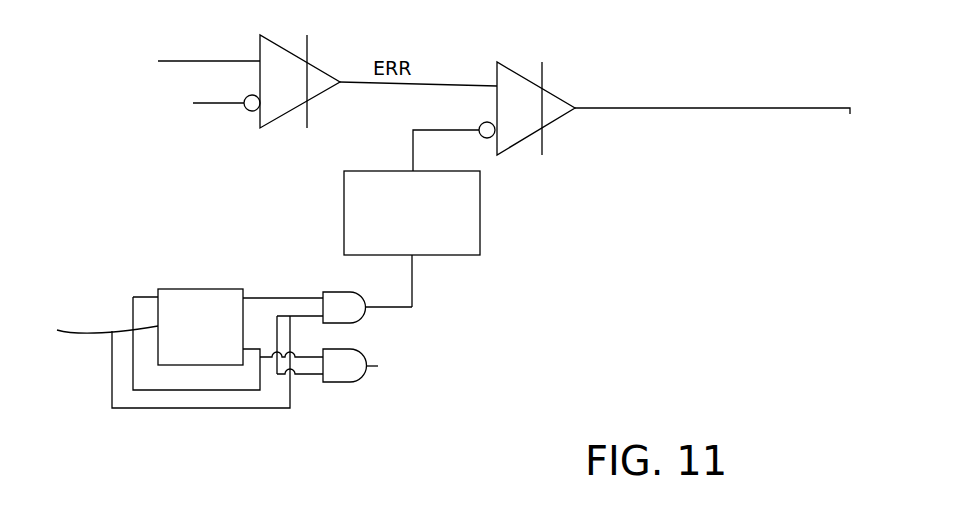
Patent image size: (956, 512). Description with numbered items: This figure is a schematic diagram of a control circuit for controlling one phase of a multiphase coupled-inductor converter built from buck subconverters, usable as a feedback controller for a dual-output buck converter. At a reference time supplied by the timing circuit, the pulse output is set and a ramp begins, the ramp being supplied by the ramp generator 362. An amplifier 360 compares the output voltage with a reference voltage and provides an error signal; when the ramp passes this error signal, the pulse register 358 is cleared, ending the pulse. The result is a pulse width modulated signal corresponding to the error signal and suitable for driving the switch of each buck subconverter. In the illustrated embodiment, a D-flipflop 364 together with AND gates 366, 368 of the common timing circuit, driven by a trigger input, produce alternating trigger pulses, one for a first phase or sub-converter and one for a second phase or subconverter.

The pulse register 358 is at (545, 103).
The amplifier 360 is at (293, 78).
The ramp generator 362 is at (463, 230).
The D-flipflop 364 is at (193, 298).
The AND gate 366 is at (340, 297).
The AND gate 368 is at (325, 373).